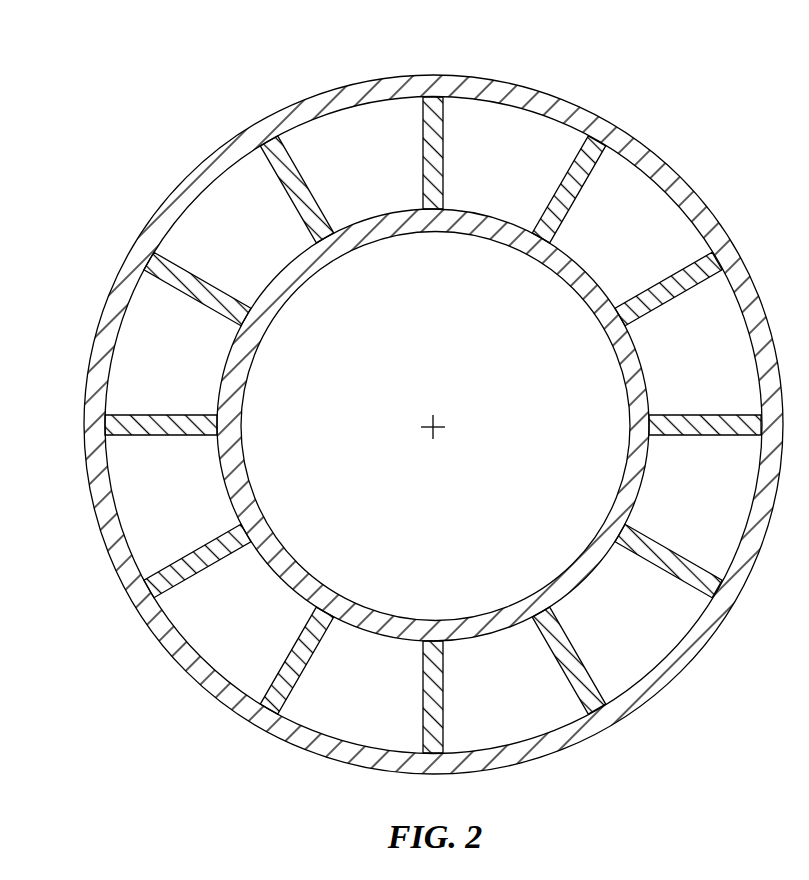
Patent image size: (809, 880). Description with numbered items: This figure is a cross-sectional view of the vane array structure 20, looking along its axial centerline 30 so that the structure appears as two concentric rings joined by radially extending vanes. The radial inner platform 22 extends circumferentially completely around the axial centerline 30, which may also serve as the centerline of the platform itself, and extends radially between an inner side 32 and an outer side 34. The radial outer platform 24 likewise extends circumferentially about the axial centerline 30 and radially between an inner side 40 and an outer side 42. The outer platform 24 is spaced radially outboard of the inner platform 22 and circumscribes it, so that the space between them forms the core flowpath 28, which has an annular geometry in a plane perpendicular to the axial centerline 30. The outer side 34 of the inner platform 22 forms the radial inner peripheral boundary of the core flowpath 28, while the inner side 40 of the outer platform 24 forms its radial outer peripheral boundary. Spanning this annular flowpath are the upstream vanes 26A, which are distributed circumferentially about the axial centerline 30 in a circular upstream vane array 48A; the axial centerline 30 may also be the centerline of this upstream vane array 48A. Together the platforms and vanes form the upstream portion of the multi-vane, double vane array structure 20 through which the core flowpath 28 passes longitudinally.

The vane array structure 20 is at (148, 108).
The radial inner platform 22 is at (433, 394).
The radial outer platform 24 is at (433, 395).
The upstream vanes 26A is at (568, 158).
The core flowpath 28 is at (177, 355).
The axial centerline 30 is at (435, 430).
The inner side of the inner platform 32 is at (377, 235).
The outer side of the inner platform 34 is at (371, 216).
The inner side of the outer platform 40 is at (355, 107).
The outer side of the outer platform 42 is at (327, 92).
The upstream vane array 48A is at (605, 160).